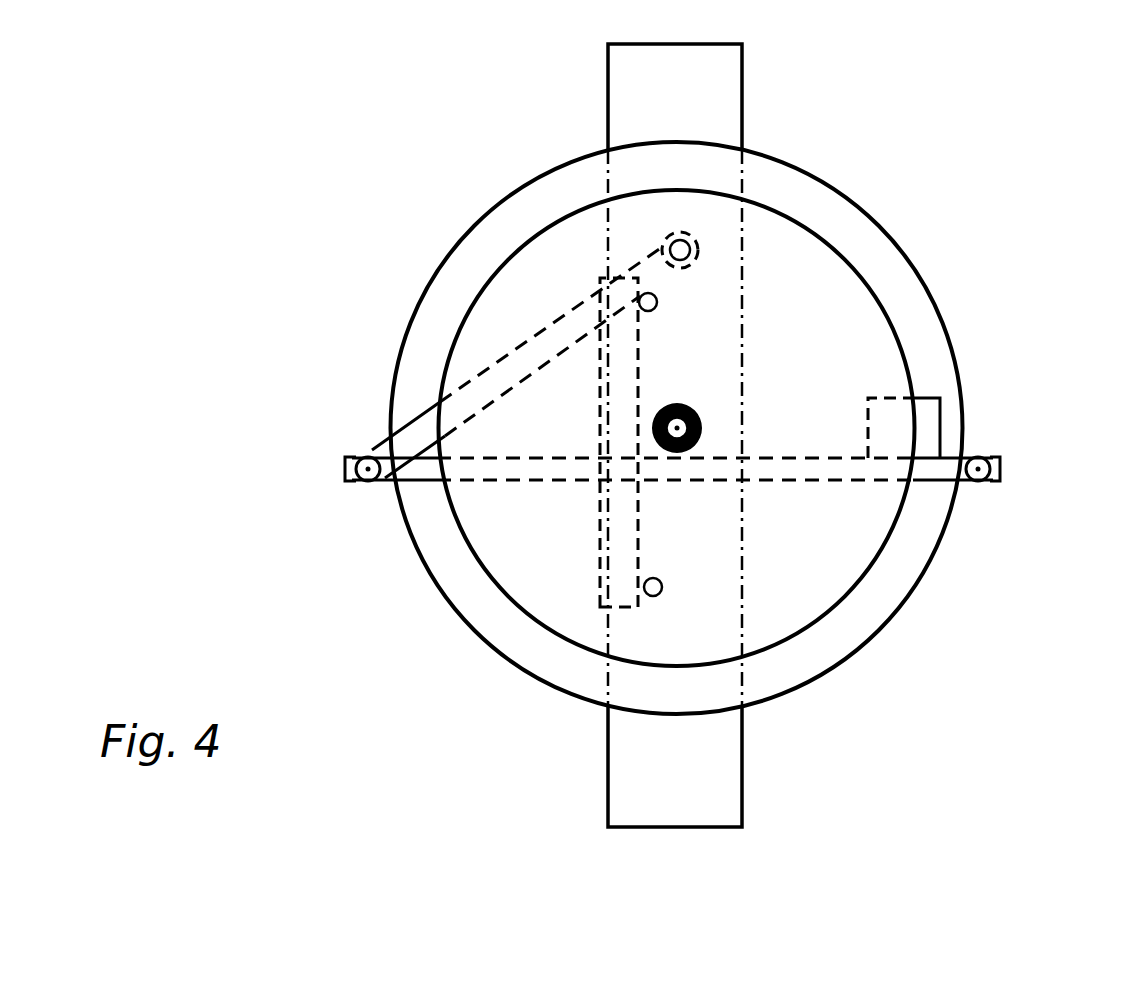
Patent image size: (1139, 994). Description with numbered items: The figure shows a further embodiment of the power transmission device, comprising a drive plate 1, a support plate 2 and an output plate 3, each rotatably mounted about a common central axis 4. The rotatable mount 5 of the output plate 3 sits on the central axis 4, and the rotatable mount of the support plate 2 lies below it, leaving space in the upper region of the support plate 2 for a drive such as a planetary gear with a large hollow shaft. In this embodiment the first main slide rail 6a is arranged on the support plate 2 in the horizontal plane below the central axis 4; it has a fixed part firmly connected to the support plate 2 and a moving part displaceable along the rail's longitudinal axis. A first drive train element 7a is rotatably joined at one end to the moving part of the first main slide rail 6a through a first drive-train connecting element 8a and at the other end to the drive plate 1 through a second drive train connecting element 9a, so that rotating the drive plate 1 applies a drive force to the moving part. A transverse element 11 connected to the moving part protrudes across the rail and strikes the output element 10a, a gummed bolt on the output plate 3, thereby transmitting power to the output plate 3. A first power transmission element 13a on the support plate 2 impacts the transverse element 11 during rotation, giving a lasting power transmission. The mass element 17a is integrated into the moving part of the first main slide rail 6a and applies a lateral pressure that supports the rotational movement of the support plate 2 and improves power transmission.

The drive plate 1 is at (728, 93).
The support plate 2 is at (947, 530).
The output plate 3 is at (863, 580).
The central axis 4 is at (700, 410).
The rotatable mount 5 is at (682, 420).
The first main slide rail 6a is at (557, 476).
The first drive train element 7a is at (427, 437).
The first drive-train connecting element 8a is at (358, 457).
The second drive train connecting element 9a is at (677, 237).
The output element 10a is at (657, 293).
The transverse element 11 is at (630, 350).
The first power transmission element 13a is at (663, 587).
The mass element 17a is at (930, 420).